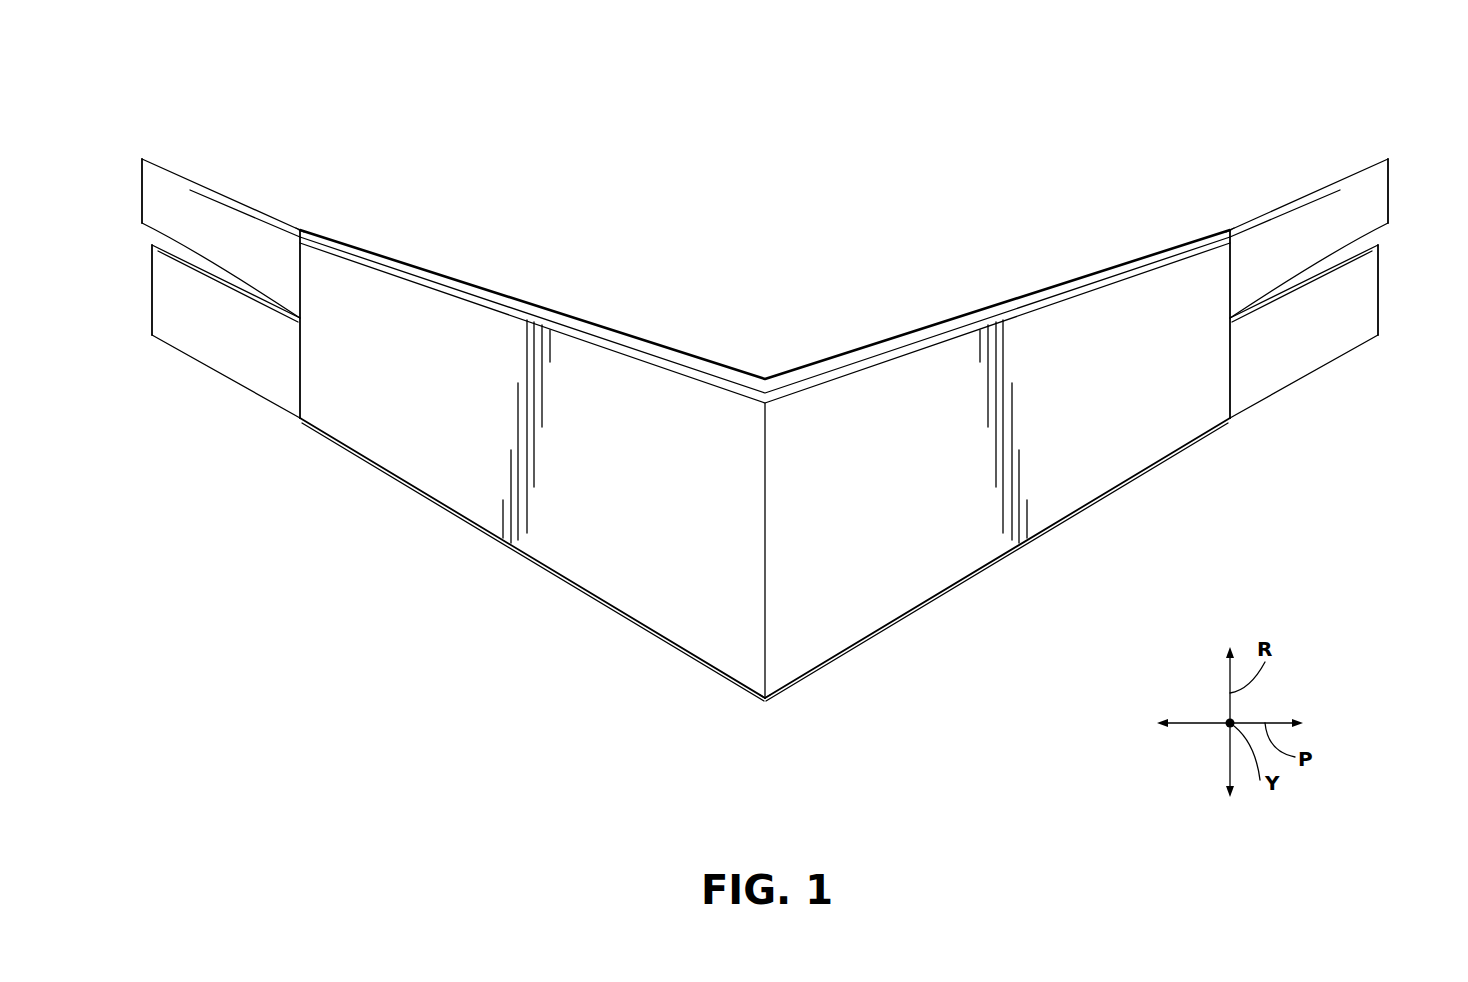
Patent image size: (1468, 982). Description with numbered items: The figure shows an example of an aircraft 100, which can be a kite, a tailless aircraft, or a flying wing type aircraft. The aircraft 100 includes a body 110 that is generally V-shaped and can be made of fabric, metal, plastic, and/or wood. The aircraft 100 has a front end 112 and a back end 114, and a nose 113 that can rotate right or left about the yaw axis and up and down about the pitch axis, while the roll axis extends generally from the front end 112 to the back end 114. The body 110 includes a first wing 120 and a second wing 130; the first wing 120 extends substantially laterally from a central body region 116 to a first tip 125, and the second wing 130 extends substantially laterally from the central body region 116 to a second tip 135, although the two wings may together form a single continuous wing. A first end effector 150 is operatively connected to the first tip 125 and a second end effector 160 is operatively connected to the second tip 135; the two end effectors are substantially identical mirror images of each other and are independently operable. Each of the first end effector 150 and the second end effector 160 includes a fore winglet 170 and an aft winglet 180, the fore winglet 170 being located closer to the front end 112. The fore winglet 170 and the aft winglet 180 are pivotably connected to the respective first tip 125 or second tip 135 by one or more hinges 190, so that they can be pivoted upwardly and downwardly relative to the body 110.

The aircraft 100 is at (1068, 94).
The body 110 is at (925, 605).
The front end 112 is at (763, 740).
The nose 113 is at (765, 698).
The back end 114 is at (767, 288).
The central body region 116 is at (734, 704).
The first wing 120 is at (563, 548).
The first tip 125 is at (308, 374).
The second wing 130 is at (1068, 488).
The second tip 135 is at (1225, 367).
The first end effector 150 is at (189, 394).
The second end effector 160 is at (1313, 406).
The fore winglet 170 is at (163, 297).
The aft winglet 180 is at (150, 196).
The hinge 190 is at (314, 212).